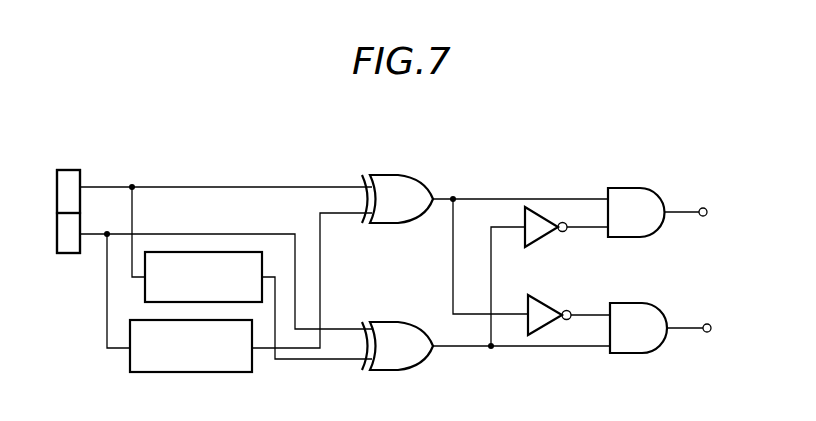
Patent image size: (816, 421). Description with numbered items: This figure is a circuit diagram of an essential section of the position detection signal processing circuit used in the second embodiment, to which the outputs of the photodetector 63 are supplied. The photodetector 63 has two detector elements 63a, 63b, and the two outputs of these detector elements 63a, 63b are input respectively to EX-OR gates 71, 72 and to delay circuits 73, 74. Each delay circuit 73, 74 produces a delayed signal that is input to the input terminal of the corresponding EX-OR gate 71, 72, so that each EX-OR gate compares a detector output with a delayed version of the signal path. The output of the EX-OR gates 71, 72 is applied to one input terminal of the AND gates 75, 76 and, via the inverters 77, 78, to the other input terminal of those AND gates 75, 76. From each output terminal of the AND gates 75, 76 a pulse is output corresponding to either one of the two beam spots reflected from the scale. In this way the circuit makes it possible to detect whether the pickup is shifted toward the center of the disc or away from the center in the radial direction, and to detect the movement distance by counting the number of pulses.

The photodetector 63 is at (68, 164).
The detector element 63a is at (75, 183).
The detector element 63b is at (70, 245).
The EX-OR gate 71 is at (407, 177).
The EX-OR gate 72 is at (397, 322).
The delay circuit 73 is at (205, 252).
The delay circuit 74 is at (239, 372).
The AND gate 75 is at (630, 188).
The AND gate 76 is at (636, 303).
The inverter 77 is at (545, 236).
The inverter 78 is at (548, 326).